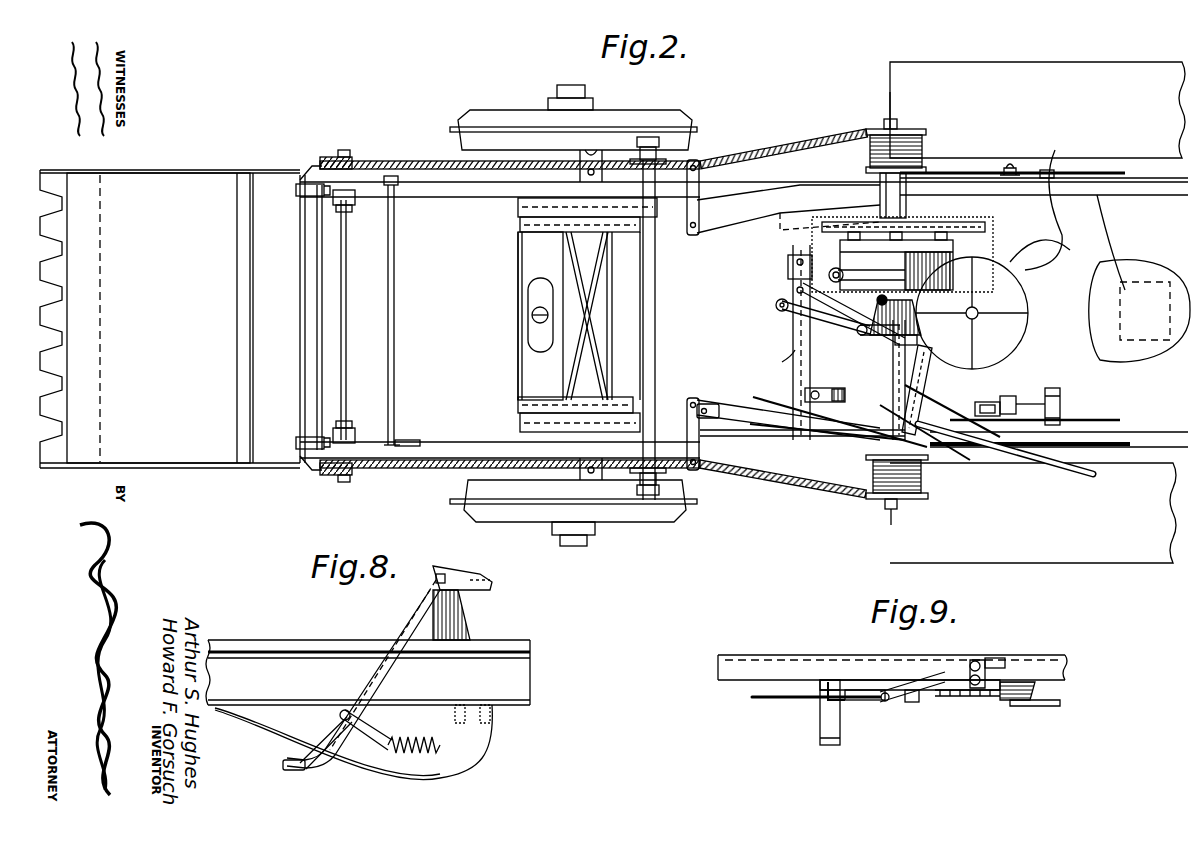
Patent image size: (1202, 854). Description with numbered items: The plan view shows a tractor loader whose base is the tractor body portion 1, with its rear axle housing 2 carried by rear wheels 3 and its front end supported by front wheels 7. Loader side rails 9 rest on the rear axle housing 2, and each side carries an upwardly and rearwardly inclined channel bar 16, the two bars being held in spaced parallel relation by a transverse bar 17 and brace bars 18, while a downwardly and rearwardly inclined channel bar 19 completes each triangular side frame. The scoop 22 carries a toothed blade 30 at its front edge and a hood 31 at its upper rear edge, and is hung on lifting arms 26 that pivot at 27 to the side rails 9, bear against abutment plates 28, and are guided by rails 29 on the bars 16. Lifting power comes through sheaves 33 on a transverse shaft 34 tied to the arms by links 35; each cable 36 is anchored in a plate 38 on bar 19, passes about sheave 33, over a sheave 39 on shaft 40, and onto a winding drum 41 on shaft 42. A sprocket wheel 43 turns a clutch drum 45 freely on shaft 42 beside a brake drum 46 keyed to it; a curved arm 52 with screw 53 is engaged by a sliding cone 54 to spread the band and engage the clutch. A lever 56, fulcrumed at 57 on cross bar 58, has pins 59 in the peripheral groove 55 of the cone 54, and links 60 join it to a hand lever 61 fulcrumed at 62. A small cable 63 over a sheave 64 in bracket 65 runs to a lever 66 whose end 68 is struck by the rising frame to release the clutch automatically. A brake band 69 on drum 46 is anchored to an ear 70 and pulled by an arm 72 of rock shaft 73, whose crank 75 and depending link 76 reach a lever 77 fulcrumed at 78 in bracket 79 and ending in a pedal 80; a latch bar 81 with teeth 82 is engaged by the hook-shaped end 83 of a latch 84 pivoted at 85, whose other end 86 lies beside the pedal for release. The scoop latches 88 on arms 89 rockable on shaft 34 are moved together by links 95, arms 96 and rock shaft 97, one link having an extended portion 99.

In FIG. 2, the body portion 1 is at (519, 270).
In FIG. 2, the rear axle housing 2 is at (1100, 167).
In FIG. 2, the rear wheels 3 is at (1128, 72).
In FIG. 2, the front wheels 7 is at (482, 116).
In FIG. 2, the side rails 9 is at (1172, 186).
In FIG. 8, the side rails 9 is at (515, 684).
In FIG. 9, the side rails 9 is at (1062, 668).
In FIG. 2, the channel bar 16 is at (552, 234).
In FIG. 2, the transverse bar 17 is at (590, 340).
In FIG. 2, the brace bars 18 is at (586, 270).
In FIG. 2, the channel bar 19 is at (718, 232).
In FIG. 2, the scoop 22 is at (178, 458).
In FIG. 2, the lifting arm 26 is at (450, 190).
In FIG. 2, the pivot 27 is at (1010, 168).
In FIG. 2, the abutment plates 28 is at (1050, 172).
In FIG. 2, the rails 29 is at (518, 206).
In FIG. 2, the blade 30 is at (58, 274).
In FIG. 2, the hood 31 is at (252, 404).
In FIG. 2, the sheaves 33 is at (350, 170).
In FIG. 2, the transverse shaft 34 is at (347, 275).
In FIG. 2, the links 35 is at (321, 166).
In FIG. 2, the cable 36 is at (430, 166).
In FIG. 2, the plate 38 is at (700, 172).
In FIG. 2, the sheave 39 is at (636, 160).
In FIG. 2, the shaft 40 is at (657, 294).
In FIG. 2, the winding drum 41 is at (905, 145).
In FIG. 2, the shaft 42 is at (892, 378).
In FIG. 2, the sprocket wheel 43 is at (945, 238).
In FIG. 2, the clutch drum 45 is at (968, 251).
In FIG. 2, the brake drum 46 is at (930, 288).
In FIG. 2, the curved arm 52 is at (870, 290).
In FIG. 2, the screw 53 is at (880, 304).
In FIG. 2, the cone 54 is at (918, 316).
In FIG. 2, the peripheral groove 55 is at (880, 338).
In FIG. 2, the lever 56 is at (806, 330).
In FIG. 2, the fulcrum 57 is at (777, 308).
In FIG. 2, the cross bar 58 is at (782, 360).
In FIG. 2, the pins 59 is at (918, 340).
In FIG. 2, the links 60 is at (940, 404).
In FIG. 2, the hand lever 61 is at (1065, 470).
In FIG. 2, the fulcrum 62 is at (818, 392).
In FIG. 2, the small cable 63 is at (930, 382).
In FIG. 2, the sheave 64 is at (930, 449).
In FIG. 2, the bracket 65 is at (875, 442).
In FIG. 2, the lever 66 is at (712, 418).
In FIG. 2, the end 68 is at (612, 400).
In FIG. 2, the brake band 69 is at (866, 275).
In FIG. 2, the ear 70 is at (790, 266).
In FIG. 2, the arm 72 is at (846, 312).
In FIG. 2, the rock shaft 73 is at (794, 378).
In FIG. 2, the crank 75 is at (838, 437).
In FIG. 2, the depending link 76 is at (838, 482).
In FIG. 8, the lever 77 is at (490, 590).
In FIG. 9, the lever 77 is at (1050, 708).
In FIG. 2, the fulcrum 78 is at (965, 460).
In FIG. 8, the fulcrum 78 is at (441, 572).
In FIG. 9, the fulcrum 78 is at (977, 660).
In FIG. 8, the bracket 79 is at (468, 616).
In FIG. 9, the bracket 79 is at (1010, 668).
In FIG. 2, the pedal 80 is at (1061, 399).
In FIG. 8, the pedal 80 is at (290, 770).
In FIG. 9, the pedal 80 is at (820, 731).
In FIG. 2, the latch bar 81 is at (1096, 428).
In FIG. 8, the latch bar 81 is at (486, 752).
In FIG. 9, the latch bar 81 is at (770, 700).
In FIG. 2, the teeth 82 is at (986, 402).
In FIG. 8, the teeth 82 is at (437, 745).
In FIG. 9, the teeth 82 is at (958, 700).
In FIG. 9, the hook-shaped end 83 is at (918, 704).
In FIG. 2, the latch 84 is at (1010, 398).
In FIG. 8, the latch 84 is at (362, 760).
In FIG. 9, the latch 84 is at (905, 708).
In FIG. 8, the pivot 85 is at (346, 710).
In FIG. 9, the pivot 85 is at (880, 702).
In FIG. 8, the end 86 is at (305, 760).
In FIG. 9, the end 86 is at (836, 685).
In FIG. 2, the latch 88 is at (297, 189).
In FIG. 2, the arm 89 is at (312, 196).
In FIG. 2, the link 95 is at (357, 196).
In FIG. 2, the arm 96 is at (392, 180).
In FIG. 2, the rock shaft 97 is at (395, 283).
In FIG. 2, the extended portion 99 is at (415, 440).